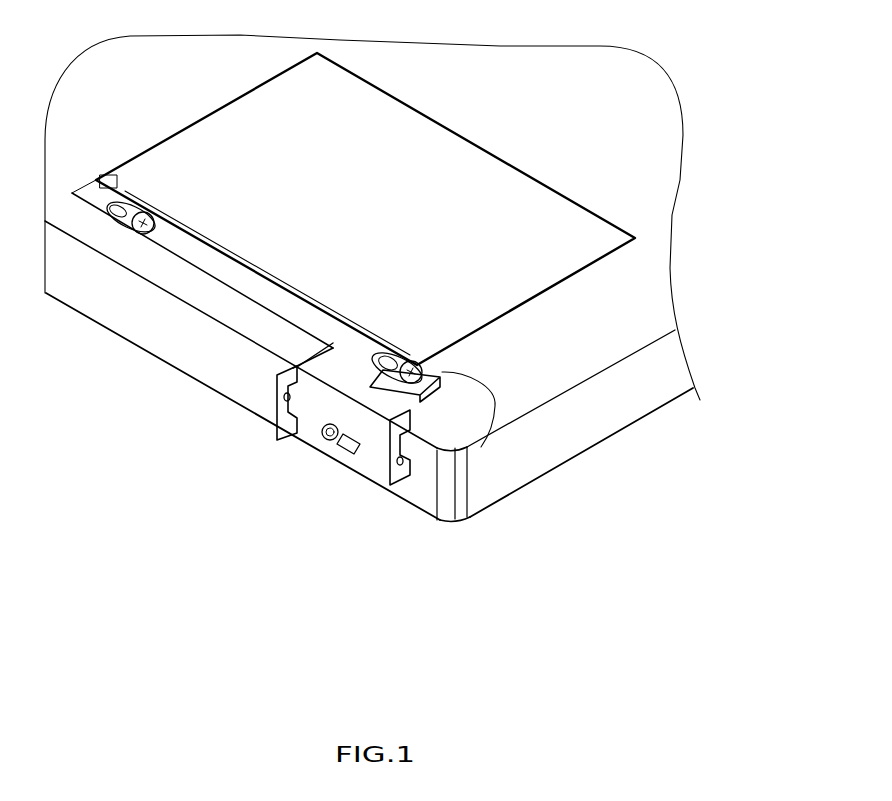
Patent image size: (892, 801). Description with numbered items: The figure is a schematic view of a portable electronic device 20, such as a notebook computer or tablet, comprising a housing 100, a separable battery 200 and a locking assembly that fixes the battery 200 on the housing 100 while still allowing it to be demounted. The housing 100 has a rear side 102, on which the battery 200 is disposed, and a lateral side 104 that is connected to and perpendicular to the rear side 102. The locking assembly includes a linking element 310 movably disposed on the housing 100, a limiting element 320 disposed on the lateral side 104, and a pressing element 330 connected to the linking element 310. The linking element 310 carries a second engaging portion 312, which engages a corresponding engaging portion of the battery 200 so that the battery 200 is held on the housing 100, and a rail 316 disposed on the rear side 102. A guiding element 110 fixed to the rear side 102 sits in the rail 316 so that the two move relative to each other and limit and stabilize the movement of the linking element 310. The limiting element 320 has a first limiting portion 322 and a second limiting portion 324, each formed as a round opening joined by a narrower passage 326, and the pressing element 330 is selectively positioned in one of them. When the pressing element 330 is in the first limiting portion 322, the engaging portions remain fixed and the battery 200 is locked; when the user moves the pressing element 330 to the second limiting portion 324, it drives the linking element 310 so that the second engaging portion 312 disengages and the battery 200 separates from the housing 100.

The electronic device 20 is at (643, 466).
The housing 100 is at (563, 423).
The rear side 102 is at (178, 282).
The lateral side 104 is at (140, 313).
The guiding element 110 is at (137, 242).
The battery 200 is at (497, 300).
The linking element 310 is at (225, 273).
The second engaging portion 312 is at (55, 232).
The rail 316 is at (113, 218).
The limiting element 320 is at (278, 420).
The first limiting portion 322 is at (291, 400).
The second limiting portion 324 is at (355, 455).
The passage 326 is at (348, 446).
The pressing element 330 is at (331, 502).